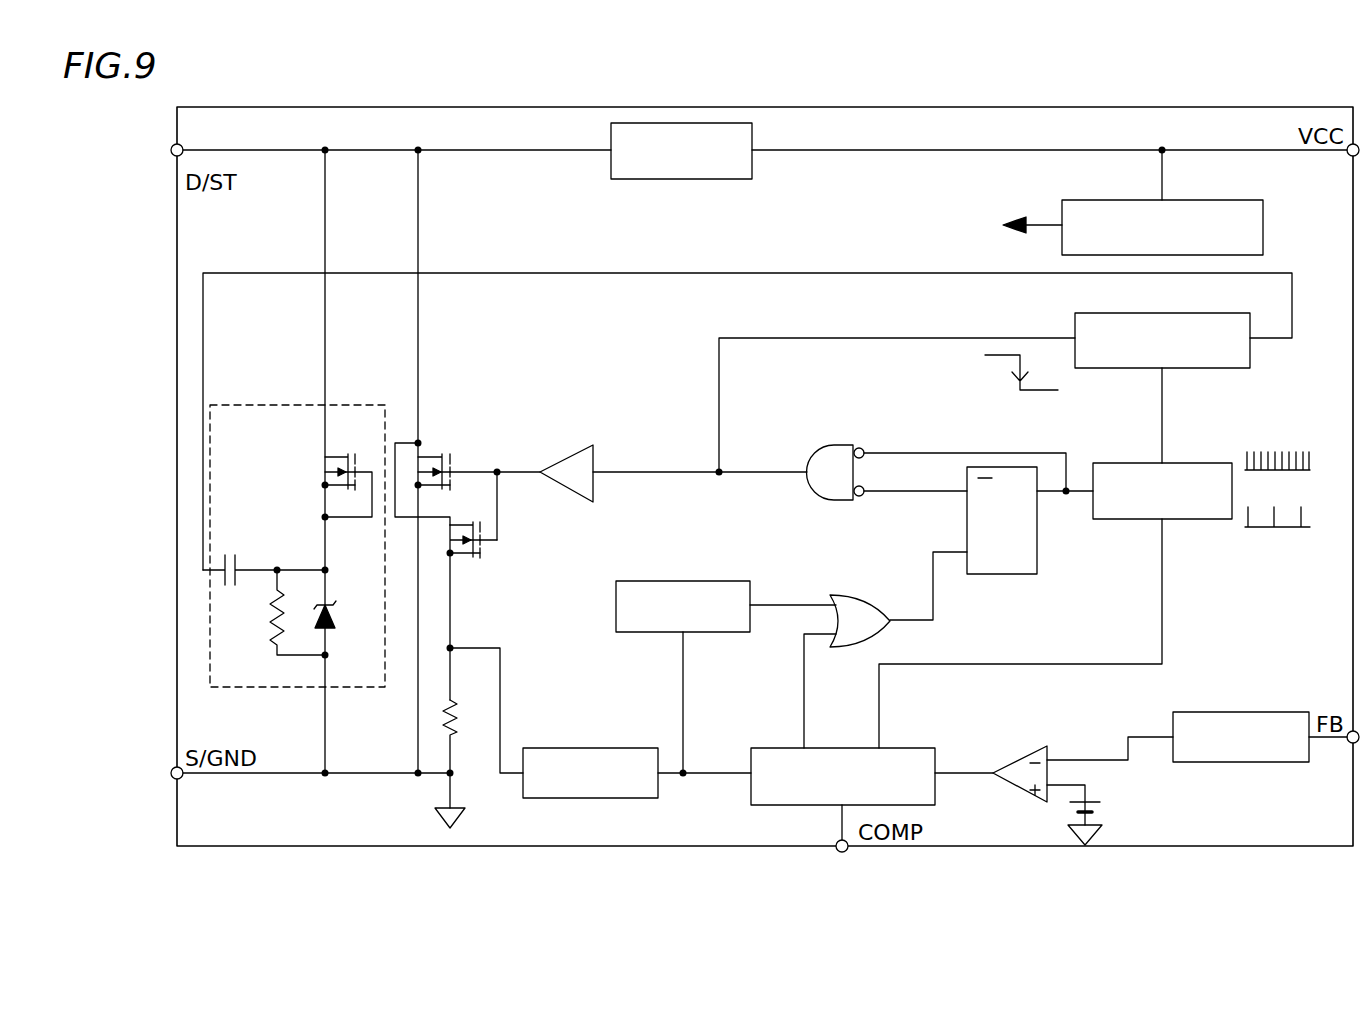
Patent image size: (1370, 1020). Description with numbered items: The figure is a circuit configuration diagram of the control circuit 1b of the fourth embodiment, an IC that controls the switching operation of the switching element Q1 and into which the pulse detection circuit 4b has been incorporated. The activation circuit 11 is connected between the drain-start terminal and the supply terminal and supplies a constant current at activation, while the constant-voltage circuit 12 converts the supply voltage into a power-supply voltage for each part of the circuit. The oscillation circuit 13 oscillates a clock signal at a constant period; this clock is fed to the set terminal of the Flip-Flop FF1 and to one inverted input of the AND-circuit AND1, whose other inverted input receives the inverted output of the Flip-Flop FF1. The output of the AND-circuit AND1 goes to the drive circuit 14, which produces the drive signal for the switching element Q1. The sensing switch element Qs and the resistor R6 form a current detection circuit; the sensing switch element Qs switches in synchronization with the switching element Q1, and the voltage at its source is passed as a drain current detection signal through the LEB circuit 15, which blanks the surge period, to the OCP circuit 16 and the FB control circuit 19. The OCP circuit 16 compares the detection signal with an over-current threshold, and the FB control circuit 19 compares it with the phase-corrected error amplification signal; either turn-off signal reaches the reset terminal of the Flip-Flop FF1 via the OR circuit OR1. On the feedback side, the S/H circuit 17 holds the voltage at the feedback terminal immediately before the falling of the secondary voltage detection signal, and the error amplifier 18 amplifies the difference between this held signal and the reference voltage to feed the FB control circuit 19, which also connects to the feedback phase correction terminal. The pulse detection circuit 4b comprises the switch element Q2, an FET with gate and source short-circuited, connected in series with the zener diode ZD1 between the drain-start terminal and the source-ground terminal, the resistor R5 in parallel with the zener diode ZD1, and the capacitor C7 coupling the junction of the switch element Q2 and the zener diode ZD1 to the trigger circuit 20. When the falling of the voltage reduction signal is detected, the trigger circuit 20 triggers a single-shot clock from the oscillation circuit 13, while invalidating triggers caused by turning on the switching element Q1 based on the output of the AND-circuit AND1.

The control circuit 1b is at (1115, 107).
The pulse detection circuit 4b is at (295, 405).
The activation circuit 11 is at (700, 179).
The constant-voltage circuit 12 is at (1218, 200).
The oscillation circuit 13 is at (1212, 519).
The drive circuit 14 is at (597, 450).
The leading edge blanking (LEB) circuit 15 is at (580, 748).
The over-current protection (OCP) circuit 16 is at (690, 581).
The sample hold (S/H) circuit 17 is at (1232, 712).
The error amplifier 18 is at (1015, 785).
The feedback (FB) control circuit 19 is at (905, 748).
The trigger circuit 20 is at (1185, 313).
The switching element Q1 is at (446, 480).
The switch element Q2 is at (348, 468).
The sensing switch element Qs is at (478, 611).
The resistor R5 is at (284, 612).
The resistor R6 is at (463, 764).
The capacitor C7 is at (264, 563).
The zener diode ZD1 is at (345, 606).
The AND-circuit AND1 is at (935, 458).
The OR circuit OR1 is at (820, 658).
The Flip-Flop FF1 is at (991, 543).